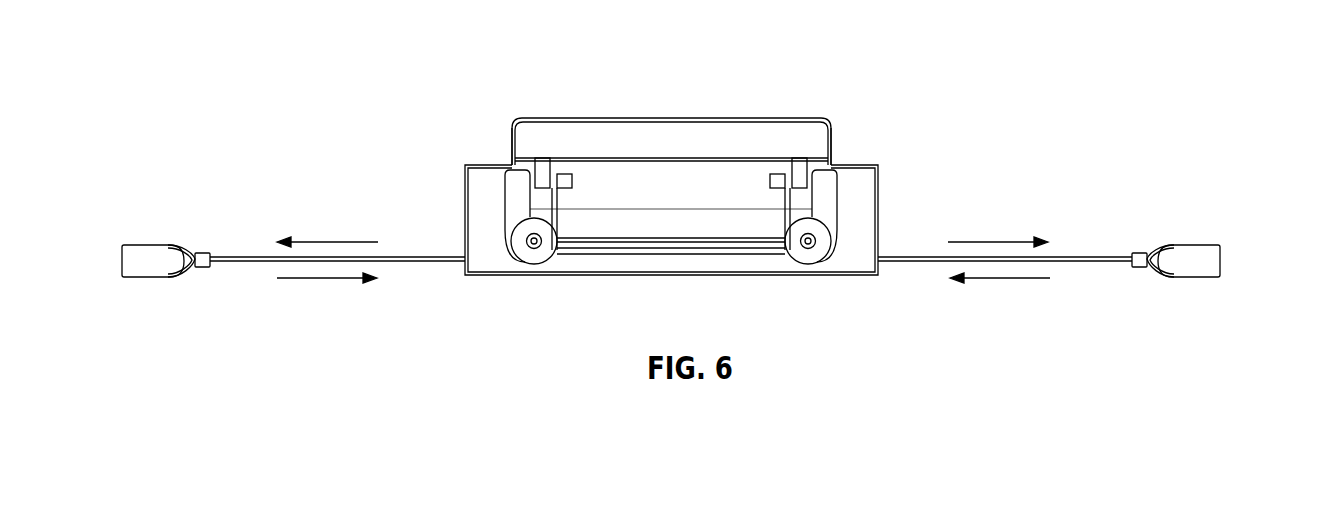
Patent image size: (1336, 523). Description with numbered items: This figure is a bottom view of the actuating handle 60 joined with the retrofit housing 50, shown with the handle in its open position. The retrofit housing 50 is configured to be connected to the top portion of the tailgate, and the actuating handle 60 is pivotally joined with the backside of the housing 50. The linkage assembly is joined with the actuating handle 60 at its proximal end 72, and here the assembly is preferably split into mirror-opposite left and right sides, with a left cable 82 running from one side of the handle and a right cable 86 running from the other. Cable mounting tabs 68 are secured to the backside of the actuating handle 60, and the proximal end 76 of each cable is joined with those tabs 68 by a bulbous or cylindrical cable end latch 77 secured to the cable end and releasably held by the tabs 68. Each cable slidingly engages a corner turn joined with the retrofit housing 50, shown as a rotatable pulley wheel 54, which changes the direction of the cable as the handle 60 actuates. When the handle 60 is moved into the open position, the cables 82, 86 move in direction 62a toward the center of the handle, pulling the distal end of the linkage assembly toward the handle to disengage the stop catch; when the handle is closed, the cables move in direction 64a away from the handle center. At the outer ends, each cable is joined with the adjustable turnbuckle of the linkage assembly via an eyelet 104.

The retrofit housing 50 is at (478, 203).
The rotatable pulley wheel 54 is at (547, 248).
The actuating handle 60 is at (800, 118).
The direction 62a is at (320, 282).
The direction 64a is at (327, 240).
The cable mounting tabs 68 is at (541, 160).
The proximal end 72 is at (491, 139).
The proximal end of the cable 76 is at (565, 206).
The cable end latch 77 is at (562, 178).
The left cable 82 is at (252, 263).
The right cable 86 is at (1062, 263).
The eyelet 104 is at (145, 244).